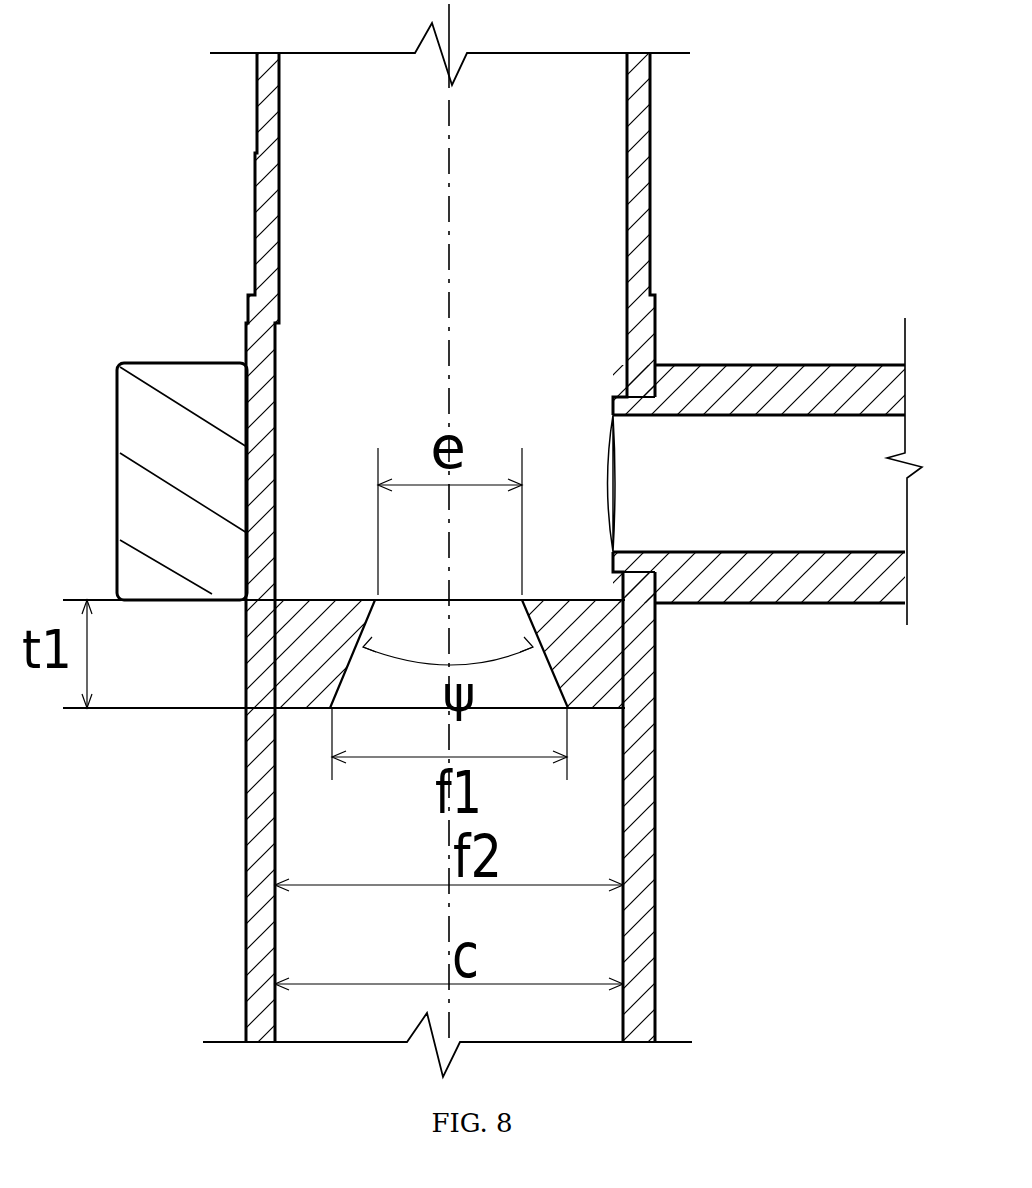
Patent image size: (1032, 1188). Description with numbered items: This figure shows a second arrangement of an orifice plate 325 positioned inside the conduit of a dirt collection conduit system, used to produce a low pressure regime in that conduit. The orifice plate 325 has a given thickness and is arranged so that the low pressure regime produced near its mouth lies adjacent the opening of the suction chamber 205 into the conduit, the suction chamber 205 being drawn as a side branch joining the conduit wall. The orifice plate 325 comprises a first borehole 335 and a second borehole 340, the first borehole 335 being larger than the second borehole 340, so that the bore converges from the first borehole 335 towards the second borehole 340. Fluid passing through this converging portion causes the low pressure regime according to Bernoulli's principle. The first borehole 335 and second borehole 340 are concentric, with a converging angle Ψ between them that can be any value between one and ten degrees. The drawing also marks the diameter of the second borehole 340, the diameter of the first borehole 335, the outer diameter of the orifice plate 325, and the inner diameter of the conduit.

The suction chamber 205 is at (758, 375).
The orifice plate 325 is at (607, 662).
The first borehole 335 is at (360, 708).
The second borehole 340 is at (408, 600).